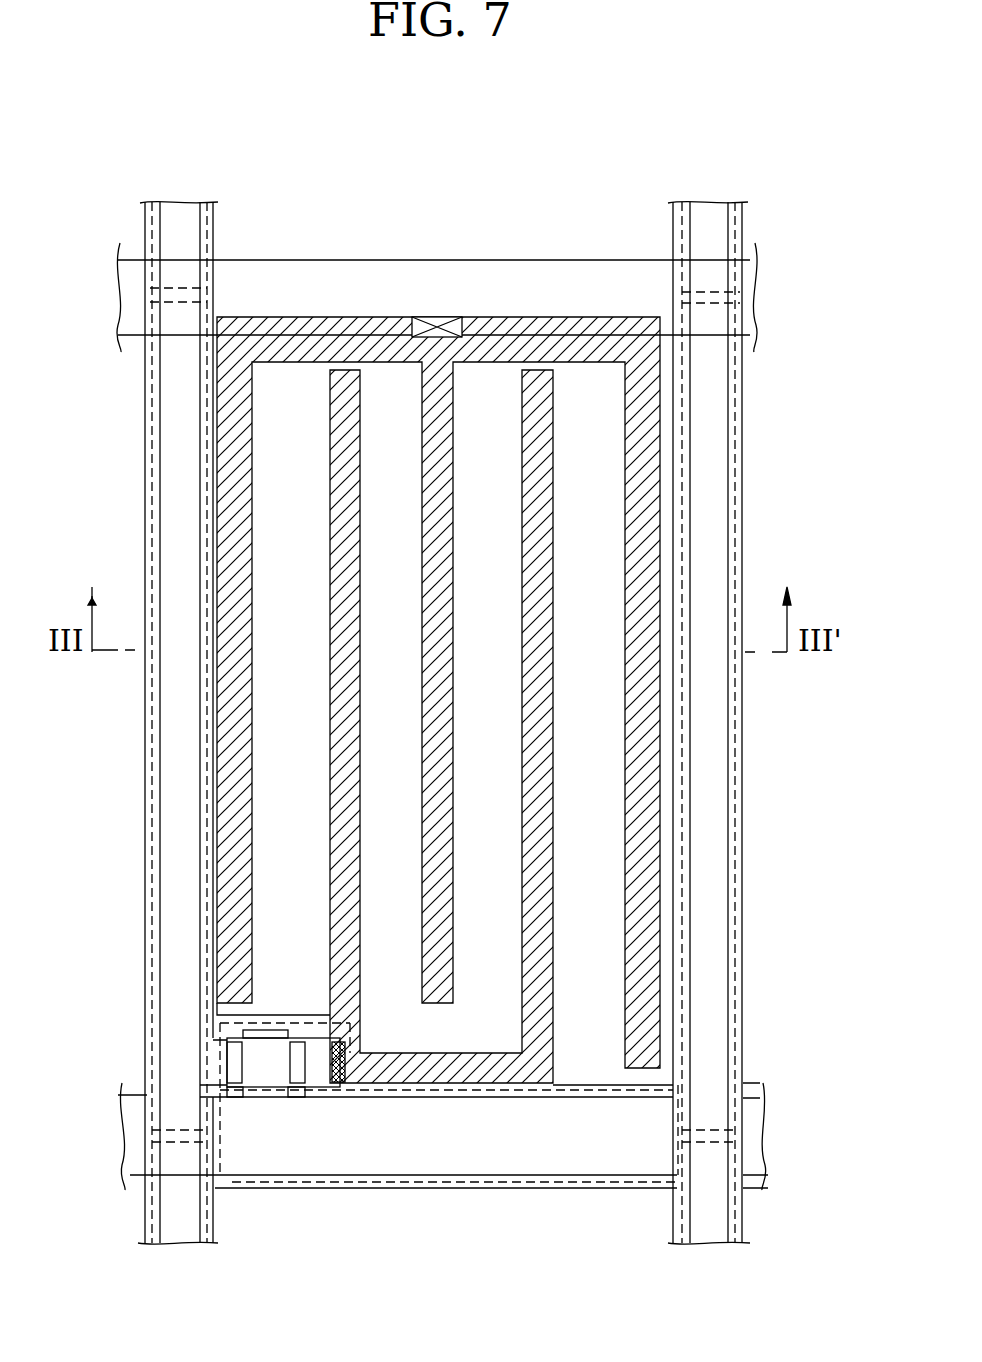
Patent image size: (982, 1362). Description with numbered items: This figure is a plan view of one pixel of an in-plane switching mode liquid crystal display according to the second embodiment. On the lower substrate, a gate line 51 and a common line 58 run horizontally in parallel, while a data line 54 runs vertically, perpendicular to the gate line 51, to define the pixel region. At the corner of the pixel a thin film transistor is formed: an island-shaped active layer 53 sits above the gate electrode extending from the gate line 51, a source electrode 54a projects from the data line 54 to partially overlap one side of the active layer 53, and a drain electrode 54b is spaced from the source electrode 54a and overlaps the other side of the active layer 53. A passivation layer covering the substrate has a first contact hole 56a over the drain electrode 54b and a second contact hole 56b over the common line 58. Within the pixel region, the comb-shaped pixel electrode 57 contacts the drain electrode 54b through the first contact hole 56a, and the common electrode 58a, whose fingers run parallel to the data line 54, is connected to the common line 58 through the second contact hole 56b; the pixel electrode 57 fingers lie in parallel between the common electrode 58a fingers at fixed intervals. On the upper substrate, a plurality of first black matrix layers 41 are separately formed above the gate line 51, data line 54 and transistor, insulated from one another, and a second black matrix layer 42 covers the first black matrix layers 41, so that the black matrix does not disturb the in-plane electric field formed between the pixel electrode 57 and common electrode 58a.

The first black matrix layer 41 is at (737, 445).
The second black matrix layer 42 is at (742, 498).
The gate line 51 is at (490, 1162).
The active layer 53 is at (225, 1052).
The data line 54 is at (160, 905).
The source electrode 54a is at (233, 1097).
The drain electrode 54b is at (305, 1097).
The first contact hole 56a is at (333, 1083).
The second contact hole 56b is at (447, 317).
The pixel electrode 57 is at (415, 1053).
The common line 58 is at (298, 258).
The common electrode 58a is at (650, 553).